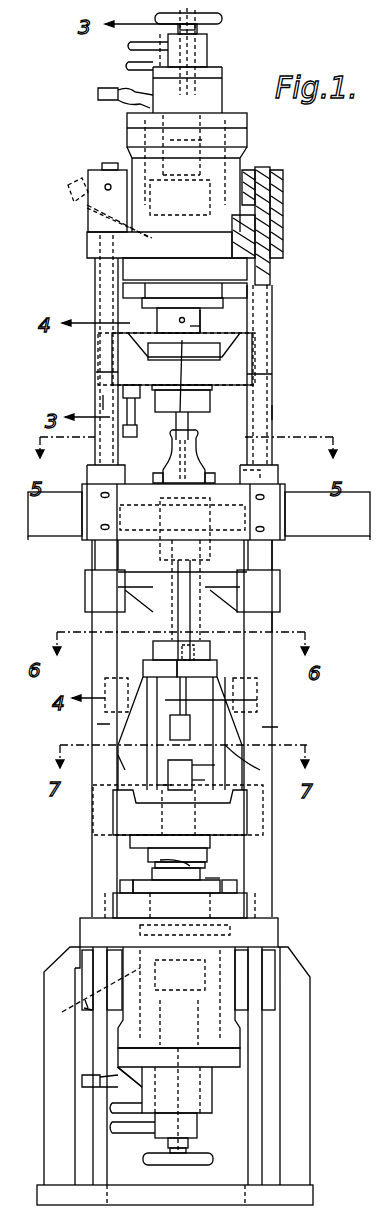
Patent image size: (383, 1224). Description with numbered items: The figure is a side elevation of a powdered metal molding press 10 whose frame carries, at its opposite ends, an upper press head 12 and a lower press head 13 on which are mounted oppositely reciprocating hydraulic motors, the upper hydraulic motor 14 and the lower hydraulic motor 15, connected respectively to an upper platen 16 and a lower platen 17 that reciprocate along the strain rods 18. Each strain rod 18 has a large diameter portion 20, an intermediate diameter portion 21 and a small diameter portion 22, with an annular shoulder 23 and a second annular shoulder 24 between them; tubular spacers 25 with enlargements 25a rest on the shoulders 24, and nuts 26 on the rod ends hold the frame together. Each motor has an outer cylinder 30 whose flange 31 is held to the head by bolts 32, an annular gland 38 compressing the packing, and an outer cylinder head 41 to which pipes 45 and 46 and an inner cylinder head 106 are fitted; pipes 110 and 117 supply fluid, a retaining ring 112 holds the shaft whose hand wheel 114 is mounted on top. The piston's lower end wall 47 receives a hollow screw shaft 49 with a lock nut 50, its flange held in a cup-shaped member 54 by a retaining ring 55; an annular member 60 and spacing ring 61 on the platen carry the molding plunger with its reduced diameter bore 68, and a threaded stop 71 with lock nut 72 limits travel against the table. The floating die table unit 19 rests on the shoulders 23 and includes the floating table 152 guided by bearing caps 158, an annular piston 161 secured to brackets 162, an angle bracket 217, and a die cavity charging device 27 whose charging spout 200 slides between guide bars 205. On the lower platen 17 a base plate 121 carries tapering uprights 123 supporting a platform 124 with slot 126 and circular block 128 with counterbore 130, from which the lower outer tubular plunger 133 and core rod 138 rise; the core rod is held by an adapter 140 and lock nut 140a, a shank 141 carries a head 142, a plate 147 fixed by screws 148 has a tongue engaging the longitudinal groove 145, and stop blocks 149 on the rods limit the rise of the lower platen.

The hand wheel 114 is at (222, 18).
The retaining ring 112 is at (197, 37).
The inner cylinder head 106 is at (207, 50).
The pipe 117 is at (143, 50).
The pipe 110 is at (127, 69).
The outer cylinder head 41 is at (222, 94).
The pipe 45 is at (108, 105).
The upper hydraulic motor 14 is at (250, 147).
The outer cylinder 30 is at (237, 163).
The nuts 26 is at (92, 170).
The pipe 46 is at (75, 178).
The upper press head 12 is at (285, 243).
The molding press 10 is at (280, 309).
The flange 31 is at (180, 588).
The bolts 32 is at (288, 887).
The lock nut 50 is at (216, 872).
The retaining ring 55 is at (168, 326).
The lower end wall 47 is at (200, 320).
The hollow screw shaft 49 is at (160, 862).
The annular gland 38 is at (220, 882).
The cup-shaped member 54 is at (223, 848).
The upper platen 16 is at (236, 361).
The tubular spacers 25 is at (96, 372).
The small diameter portion 22 is at (103, 398).
The spacing ring 61 is at (212, 388).
The annular member 60 is at (210, 405).
The reduced diameter bore 68 is at (190, 425).
The lock nut 72 is at (135, 405).
The threaded stop 71 is at (137, 431).
The charging spout 200 is at (170, 452).
The die cavity charging device 27 is at (198, 467).
The guide bars 205 is at (153, 477).
The enlargements 25a is at (87, 470).
The second annular shoulder 24 is at (278, 476).
The floating die table unit 19 is at (88, 548).
The bearing caps 158 is at (98, 514).
The angle bracket 217 is at (40, 536).
The floating table 152 is at (182, 526).
The intermediate diameter portion 21 is at (95, 562).
The brackets 162 is at (100, 598).
The annular piston 161 is at (170, 580).
The lower outer tubular plunger 133 is at (190, 610).
The annular shoulder 23 is at (272, 620).
The circular block 128 is at (158, 648).
The counterbore 130 is at (200, 645).
The platform 124 is at (160, 668).
The slot 126 is at (197, 668).
The stop blocks 149 is at (124, 678).
The strain rods 18 is at (90, 655).
The core rod 138 is at (192, 696).
The lock nut 140a is at (257, 700).
The adapter 140 is at (190, 725).
The large diameter portion 20 is at (97, 727).
The longitudinal groove 145 is at (118, 770).
The head 142 is at (168, 772).
The plate 147 is at (160, 785).
The shank 141 is at (215, 761).
The screws 148 is at (205, 780).
The uprights 123 is at (260, 761).
The base plate 121 is at (200, 796).
The lower platen 17 is at (232, 825).
The lower press head 13 is at (278, 935).
The lower hydraulic motor 15 is at (228, 1072).